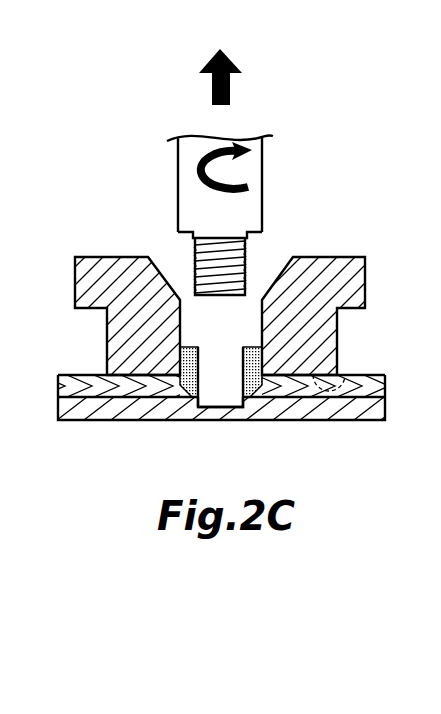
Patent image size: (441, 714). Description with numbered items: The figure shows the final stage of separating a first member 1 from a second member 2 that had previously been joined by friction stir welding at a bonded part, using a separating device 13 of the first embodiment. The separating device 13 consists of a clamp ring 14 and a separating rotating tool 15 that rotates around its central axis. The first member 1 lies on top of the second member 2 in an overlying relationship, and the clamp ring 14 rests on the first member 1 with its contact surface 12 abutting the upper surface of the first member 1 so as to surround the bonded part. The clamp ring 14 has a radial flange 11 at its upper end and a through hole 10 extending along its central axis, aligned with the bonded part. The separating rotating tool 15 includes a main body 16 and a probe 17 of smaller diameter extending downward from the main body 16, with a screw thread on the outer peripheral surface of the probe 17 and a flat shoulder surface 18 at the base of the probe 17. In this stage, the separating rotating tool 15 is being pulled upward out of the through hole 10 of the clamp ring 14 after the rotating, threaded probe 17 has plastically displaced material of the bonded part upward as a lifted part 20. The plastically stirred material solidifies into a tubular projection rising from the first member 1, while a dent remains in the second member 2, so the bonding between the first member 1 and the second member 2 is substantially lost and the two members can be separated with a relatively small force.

The first member 1 is at (60, 386).
The second member 2 is at (60, 407).
The through hole 10 is at (260, 322).
The radial flange 11 is at (355, 278).
The contact surface 12 is at (340, 387).
The separating device 13 is at (109, 199).
The clamp ring 14 is at (346, 278).
The separating rotating tool 15 is at (257, 128).
The main body 16 is at (196, 140).
The probe 17 is at (246, 258).
The shoulder surface 18 is at (185, 233).
The lifted part 20 is at (196, 377).